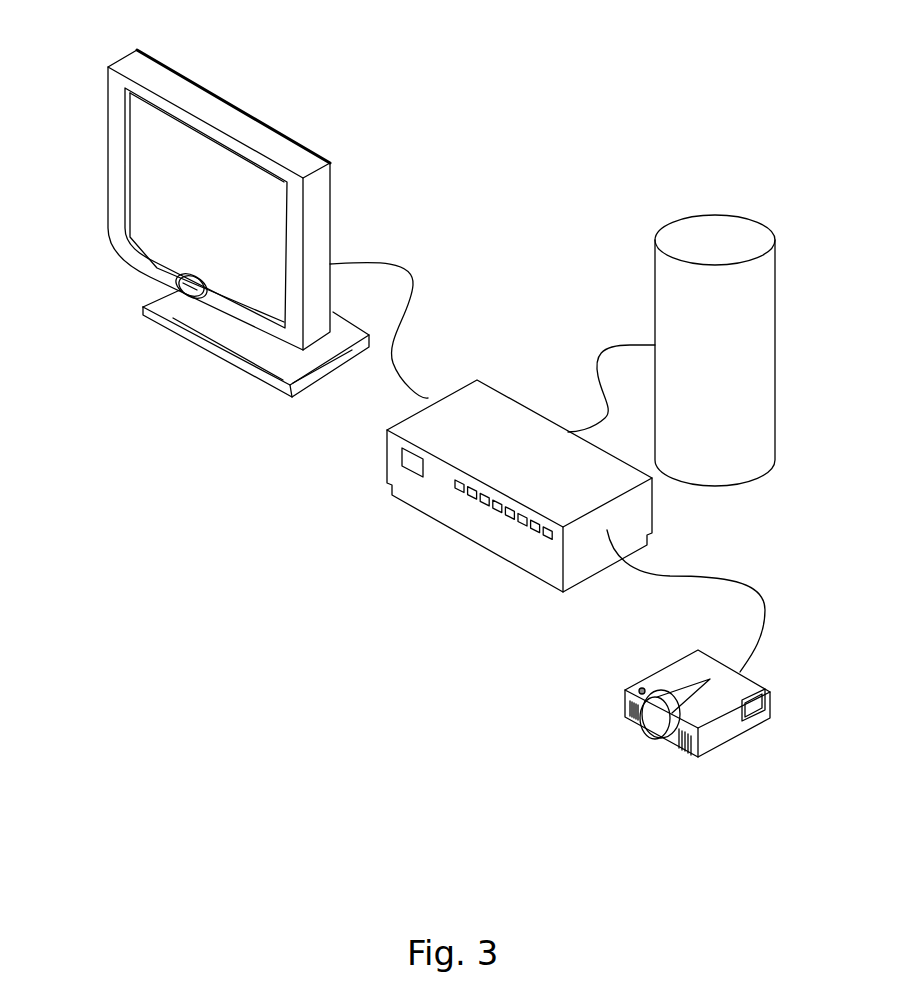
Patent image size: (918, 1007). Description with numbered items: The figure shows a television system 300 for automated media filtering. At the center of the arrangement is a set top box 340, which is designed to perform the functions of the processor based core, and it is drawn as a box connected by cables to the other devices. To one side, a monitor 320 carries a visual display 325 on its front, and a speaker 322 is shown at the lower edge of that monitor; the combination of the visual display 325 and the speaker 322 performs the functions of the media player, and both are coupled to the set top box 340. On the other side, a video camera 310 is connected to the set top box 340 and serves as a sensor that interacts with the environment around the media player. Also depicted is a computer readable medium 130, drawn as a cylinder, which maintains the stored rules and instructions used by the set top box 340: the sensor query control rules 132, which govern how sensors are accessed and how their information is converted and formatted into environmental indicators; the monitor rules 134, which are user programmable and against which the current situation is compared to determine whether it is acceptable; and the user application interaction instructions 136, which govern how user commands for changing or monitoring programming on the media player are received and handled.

The television system 300 is at (494, 138).
The video camera 310 is at (737, 733).
The monitor 320 is at (208, 207).
The speaker 322 is at (177, 283).
The visual display 325 is at (223, 209).
The set top box 340 is at (530, 471).
The computer readable medium 130 is at (754, 350).
The sensor query control rules 132 is at (753, 305).
The monitor rules 134 is at (713, 362).
The user application interaction instructions 136 is at (758, 430).